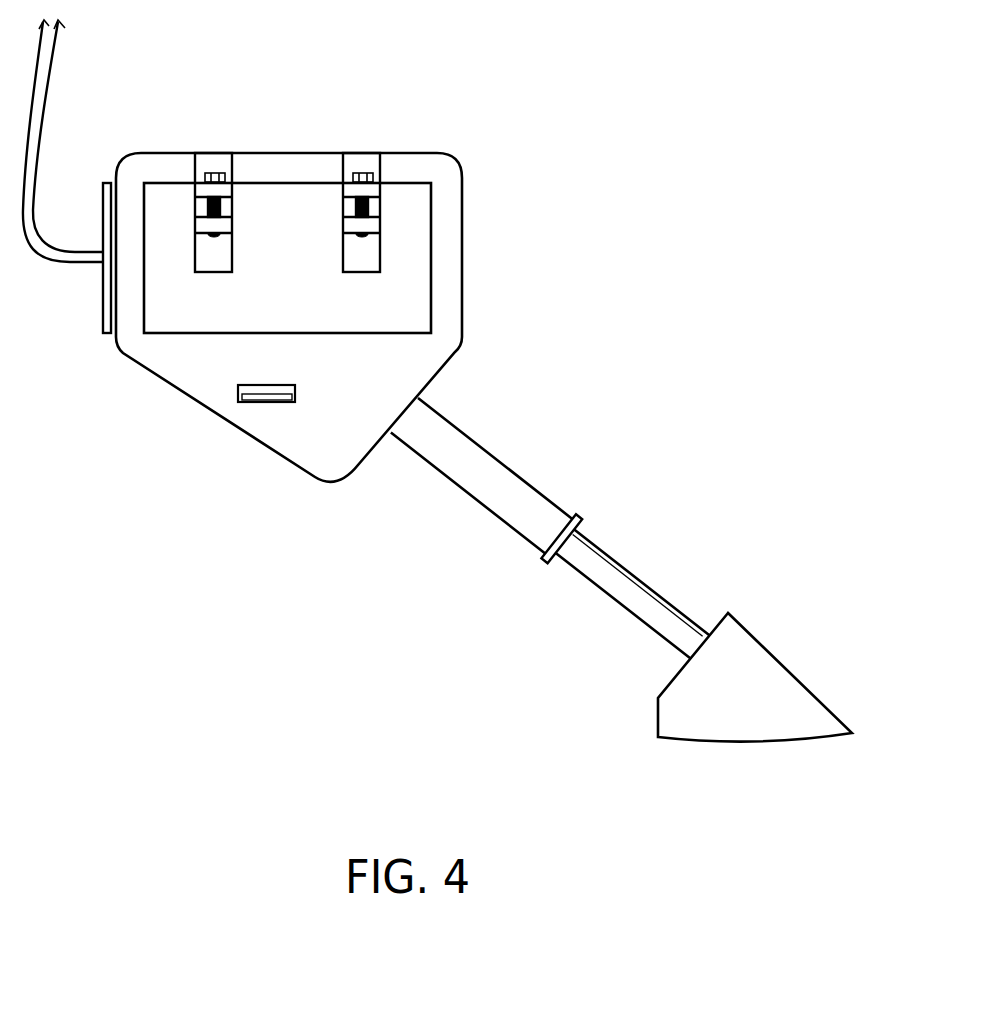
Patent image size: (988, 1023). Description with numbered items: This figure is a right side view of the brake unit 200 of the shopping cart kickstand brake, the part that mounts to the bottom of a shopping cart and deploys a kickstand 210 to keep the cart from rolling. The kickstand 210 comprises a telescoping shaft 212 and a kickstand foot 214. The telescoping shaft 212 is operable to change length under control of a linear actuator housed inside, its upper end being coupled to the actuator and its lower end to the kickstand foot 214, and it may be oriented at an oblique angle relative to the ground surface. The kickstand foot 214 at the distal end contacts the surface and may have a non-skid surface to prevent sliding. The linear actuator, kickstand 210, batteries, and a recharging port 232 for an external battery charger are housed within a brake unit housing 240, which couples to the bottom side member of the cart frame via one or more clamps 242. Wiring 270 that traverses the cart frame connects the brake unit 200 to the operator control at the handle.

The brake unit 200 is at (922, 522).
The kickstand 210 is at (677, 788).
The telescoping shaft 212 is at (655, 590).
The kickstand foot 214 is at (763, 698).
The recharging port 232 is at (240, 397).
The brake unit housing 240 is at (118, 350).
The clamps 242 is at (355, 163).
The wiring 270 is at (45, 128).